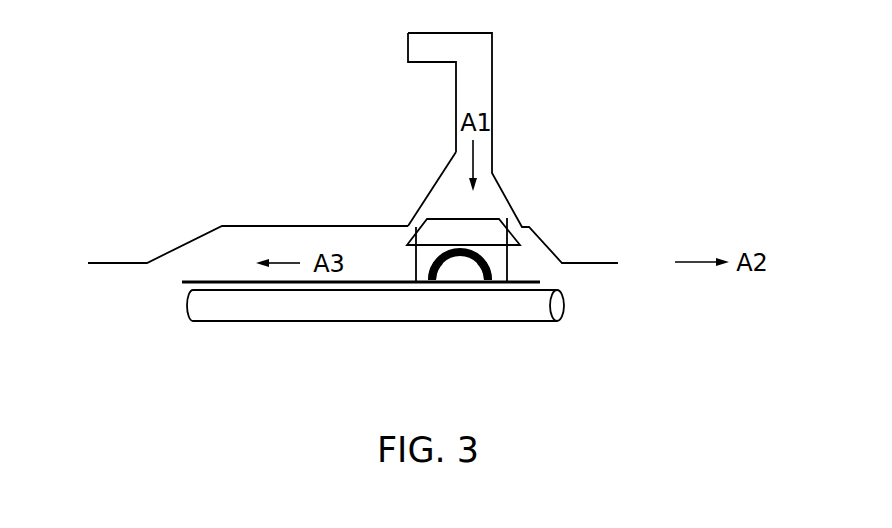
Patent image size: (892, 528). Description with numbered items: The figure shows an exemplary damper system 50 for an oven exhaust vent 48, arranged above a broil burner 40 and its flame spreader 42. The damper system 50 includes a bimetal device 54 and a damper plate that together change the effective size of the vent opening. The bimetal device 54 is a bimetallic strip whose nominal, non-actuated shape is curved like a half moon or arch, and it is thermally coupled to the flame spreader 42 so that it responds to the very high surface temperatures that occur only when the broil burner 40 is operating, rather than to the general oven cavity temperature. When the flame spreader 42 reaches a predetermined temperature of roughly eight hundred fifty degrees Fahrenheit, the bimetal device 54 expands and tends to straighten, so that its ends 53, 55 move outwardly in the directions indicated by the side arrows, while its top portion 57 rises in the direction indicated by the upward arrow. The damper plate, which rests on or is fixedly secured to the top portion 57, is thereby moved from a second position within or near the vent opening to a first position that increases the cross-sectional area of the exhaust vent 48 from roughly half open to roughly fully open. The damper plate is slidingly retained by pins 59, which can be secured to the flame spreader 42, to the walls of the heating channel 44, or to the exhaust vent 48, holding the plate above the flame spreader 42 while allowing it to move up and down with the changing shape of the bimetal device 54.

The broil burner 40 is at (558, 305).
The flame spreader 42 is at (213, 282).
The heating channel 44 is at (162, 276).
The exhaust vent 48 is at (408, 47).
The damper system 50 is at (441, 200).
The end of the bimetal device 53 is at (486, 282).
The bimetal device 54 is at (486, 256).
The end of the bimetal device 55 is at (433, 282).
The top portion of the bimetal device 57 is at (461, 247).
The pins 59 is at (402, 253).